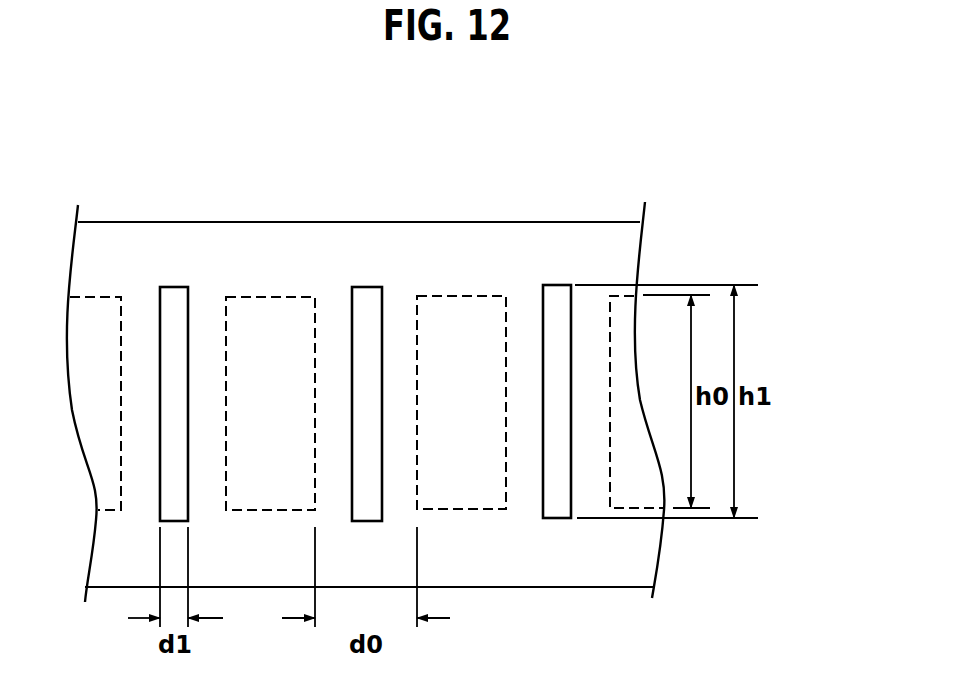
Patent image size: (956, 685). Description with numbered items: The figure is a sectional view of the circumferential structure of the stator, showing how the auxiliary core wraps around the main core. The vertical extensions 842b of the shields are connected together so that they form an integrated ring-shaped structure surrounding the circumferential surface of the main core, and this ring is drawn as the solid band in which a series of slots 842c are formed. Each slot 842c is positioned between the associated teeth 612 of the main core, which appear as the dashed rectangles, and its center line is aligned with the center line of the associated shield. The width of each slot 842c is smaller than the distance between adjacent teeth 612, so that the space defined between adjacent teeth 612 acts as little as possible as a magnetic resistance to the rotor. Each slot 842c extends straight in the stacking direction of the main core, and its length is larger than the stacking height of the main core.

The teeth 612 is at (263, 297).
The vertical extensions 842b is at (514, 240).
The slot 842c is at (363, 287).